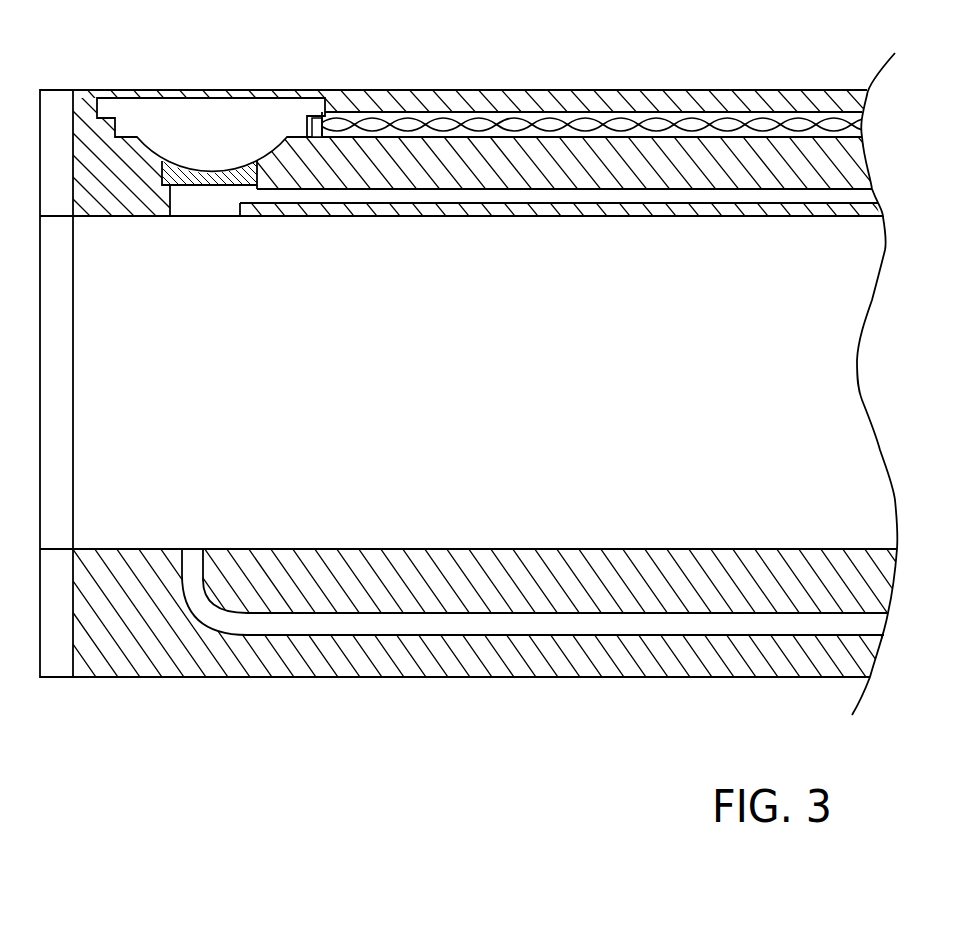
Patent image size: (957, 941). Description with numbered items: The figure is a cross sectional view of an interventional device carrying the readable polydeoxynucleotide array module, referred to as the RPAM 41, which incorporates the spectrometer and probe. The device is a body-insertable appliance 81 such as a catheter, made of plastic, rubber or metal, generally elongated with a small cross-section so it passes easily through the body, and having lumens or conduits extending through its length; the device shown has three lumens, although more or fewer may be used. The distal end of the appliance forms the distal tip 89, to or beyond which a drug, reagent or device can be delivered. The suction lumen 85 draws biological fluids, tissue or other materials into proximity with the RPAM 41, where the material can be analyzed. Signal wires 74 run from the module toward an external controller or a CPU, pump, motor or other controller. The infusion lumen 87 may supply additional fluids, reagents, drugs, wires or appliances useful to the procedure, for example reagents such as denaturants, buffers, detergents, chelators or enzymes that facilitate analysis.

The RPAM 41 is at (163, 108).
The signal wires 74 is at (530, 128).
The body-insertable appliance 81 is at (678, 90).
The suction lumen 85 is at (170, 203).
The infusion lumen 87 is at (183, 568).
The distal tip 89 is at (57, 90).